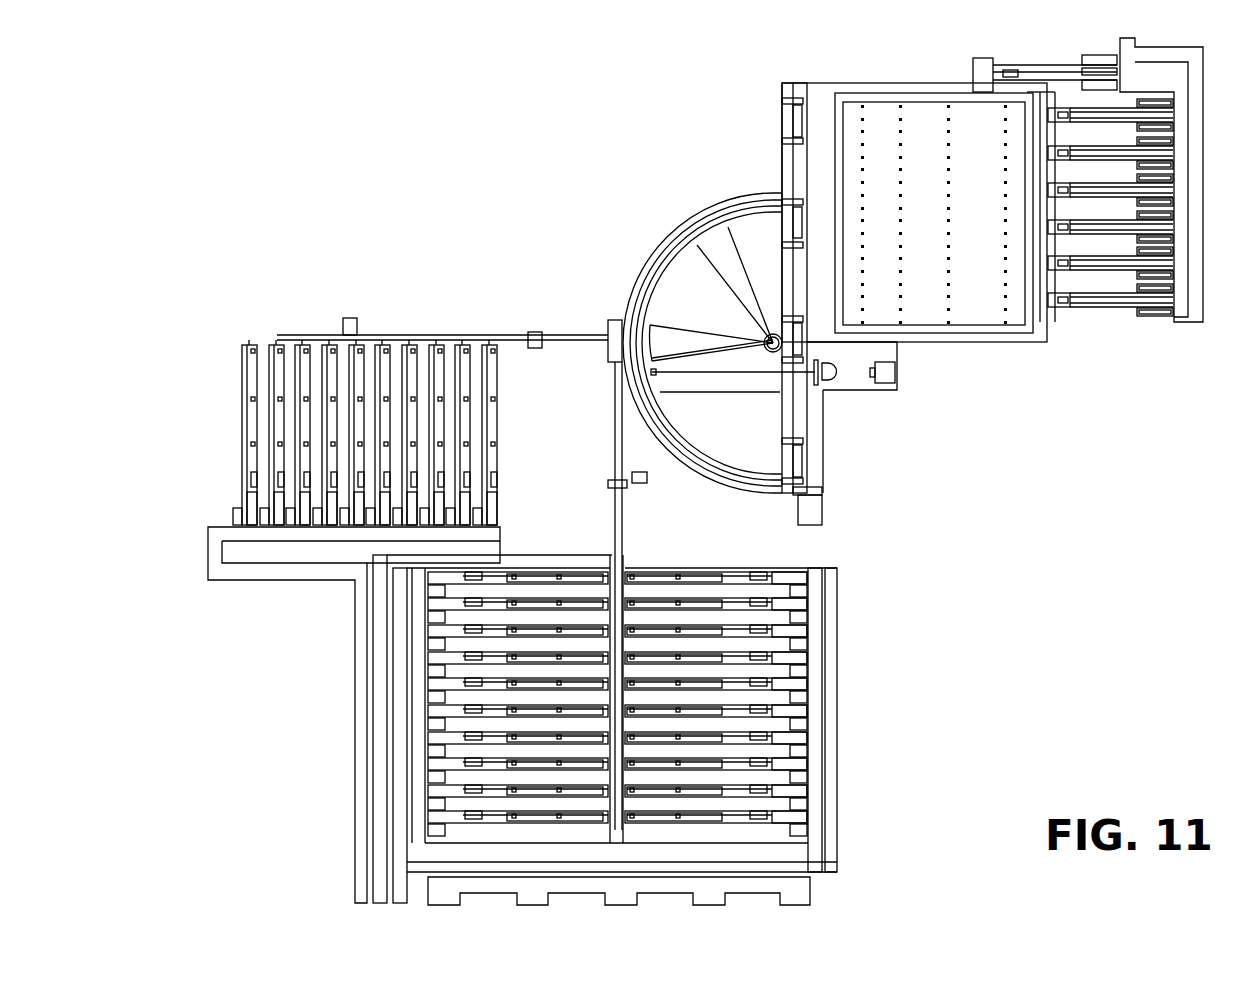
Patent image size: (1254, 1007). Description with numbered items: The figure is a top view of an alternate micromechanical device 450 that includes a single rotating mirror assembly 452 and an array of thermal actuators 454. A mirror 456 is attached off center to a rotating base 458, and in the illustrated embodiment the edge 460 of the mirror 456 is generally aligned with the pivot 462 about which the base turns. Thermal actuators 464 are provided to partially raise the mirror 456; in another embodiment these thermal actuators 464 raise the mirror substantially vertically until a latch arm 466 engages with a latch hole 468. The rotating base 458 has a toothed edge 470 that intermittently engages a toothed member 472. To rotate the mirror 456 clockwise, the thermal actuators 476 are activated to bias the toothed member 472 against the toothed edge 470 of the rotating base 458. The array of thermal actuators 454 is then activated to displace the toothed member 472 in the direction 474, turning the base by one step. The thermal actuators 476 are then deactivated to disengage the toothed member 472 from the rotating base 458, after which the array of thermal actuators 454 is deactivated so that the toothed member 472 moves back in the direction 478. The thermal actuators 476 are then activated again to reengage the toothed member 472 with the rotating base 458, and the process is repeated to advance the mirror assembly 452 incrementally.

The micromechanical device 450 is at (393, 166).
The rotating mirror assembly 452 is at (651, 149).
The array of thermal actuators 454 is at (867, 645).
The mirror 456 is at (923, 112).
The rotating base 458 is at (673, 260).
The edge 460 is at (934, 343).
The pivot 462 is at (766, 339).
The thermal actuators 464 is at (1099, 322).
The latch arm 466 is at (735, 373).
The latch hole 468 is at (885, 385).
The toothed edge 470 is at (638, 272).
The toothed member 472 is at (608, 328).
The direction 474 is at (570, 462).
The thermal actuators 476 is at (292, 311).
The direction 478 is at (660, 495).